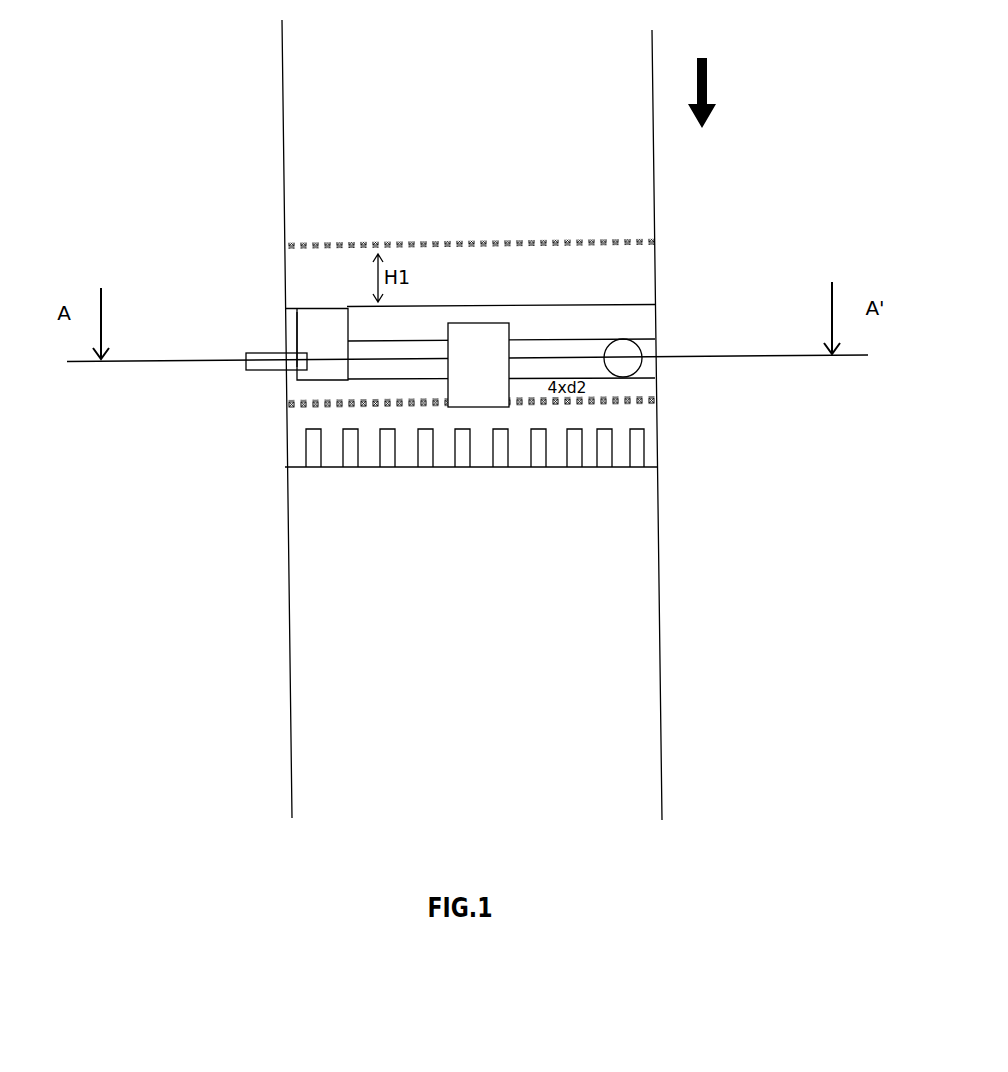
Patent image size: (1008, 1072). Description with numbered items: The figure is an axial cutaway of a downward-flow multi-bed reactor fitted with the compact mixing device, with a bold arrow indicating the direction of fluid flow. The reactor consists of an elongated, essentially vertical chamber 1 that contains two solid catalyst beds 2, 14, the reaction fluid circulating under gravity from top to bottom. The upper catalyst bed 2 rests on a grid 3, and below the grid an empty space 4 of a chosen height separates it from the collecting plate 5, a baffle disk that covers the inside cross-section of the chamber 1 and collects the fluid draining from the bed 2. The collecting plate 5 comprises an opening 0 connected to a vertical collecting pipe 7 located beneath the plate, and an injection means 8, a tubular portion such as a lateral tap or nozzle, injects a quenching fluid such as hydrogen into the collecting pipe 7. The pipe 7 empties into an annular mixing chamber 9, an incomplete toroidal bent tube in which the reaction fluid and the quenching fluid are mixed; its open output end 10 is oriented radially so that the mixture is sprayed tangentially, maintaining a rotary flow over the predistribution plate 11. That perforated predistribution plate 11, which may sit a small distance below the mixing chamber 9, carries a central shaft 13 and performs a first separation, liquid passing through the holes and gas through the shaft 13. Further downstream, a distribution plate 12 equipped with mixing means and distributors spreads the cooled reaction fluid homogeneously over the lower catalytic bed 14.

The opening 0 is at (320, 308).
The chamber 1 is at (282, 173).
The solid catalyst bed 2 is at (473, 138).
The grid 3 is at (298, 238).
The empty space 4 is at (463, 281).
The collecting plate 5 is at (573, 305).
The collecting pipe 7 is at (297, 337).
The injection means 8 is at (268, 370).
The annular mixing chamber 9 is at (572, 339).
The output end 10 is at (640, 373).
The predistribution plate 11 is at (655, 398).
The distribution plate 12 is at (655, 465).
The shaft 13 is at (473, 322).
The catalytic bed 14 is at (468, 618).